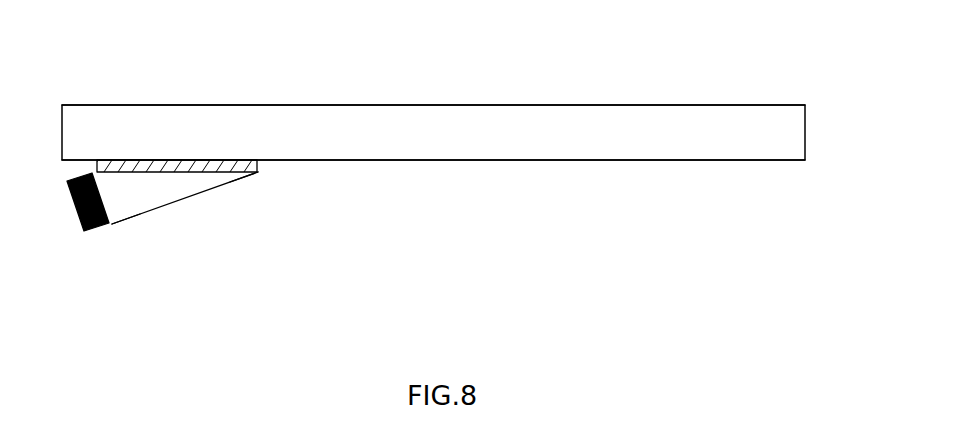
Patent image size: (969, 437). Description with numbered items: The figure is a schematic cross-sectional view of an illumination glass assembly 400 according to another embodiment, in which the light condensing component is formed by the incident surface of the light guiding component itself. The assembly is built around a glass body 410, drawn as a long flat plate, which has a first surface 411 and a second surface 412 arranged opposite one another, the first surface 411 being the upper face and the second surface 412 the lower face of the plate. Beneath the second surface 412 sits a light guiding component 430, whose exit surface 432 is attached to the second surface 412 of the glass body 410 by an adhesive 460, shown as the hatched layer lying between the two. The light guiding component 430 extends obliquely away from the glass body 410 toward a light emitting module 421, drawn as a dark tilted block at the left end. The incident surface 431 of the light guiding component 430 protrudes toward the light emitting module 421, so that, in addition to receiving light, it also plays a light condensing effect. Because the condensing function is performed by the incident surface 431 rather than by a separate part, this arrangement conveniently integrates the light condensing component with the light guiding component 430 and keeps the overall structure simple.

The illumination glass assembly 400 is at (448, 30).
The glass body 410 is at (698, 145).
The first surface 411 is at (583, 105).
The second surface 412 is at (598, 160).
The light emitting module 421 is at (101, 228).
The light guiding component 430 is at (172, 202).
The incident surface 431 is at (112, 203).
The exit surface 432 is at (210, 172).
The adhesive 460 is at (258, 165).